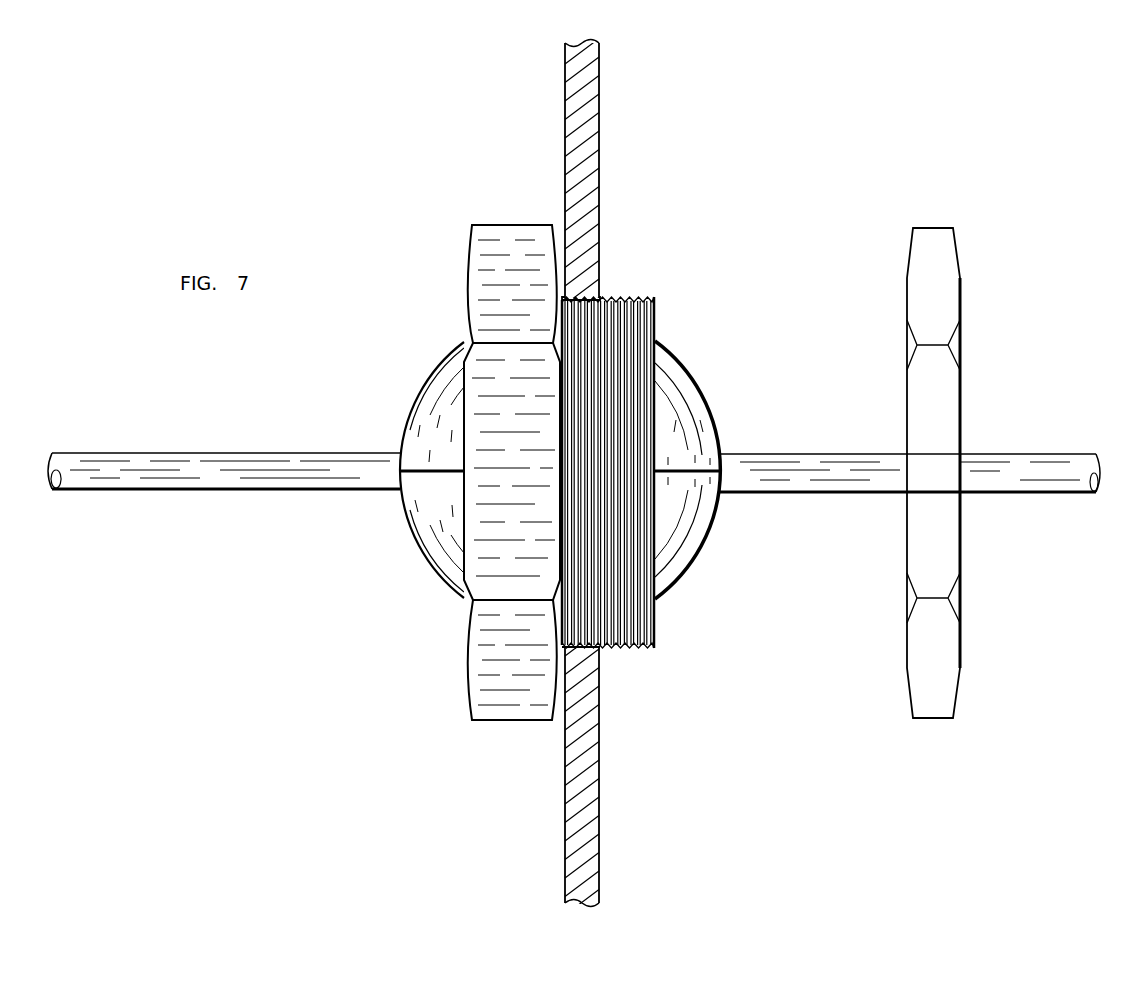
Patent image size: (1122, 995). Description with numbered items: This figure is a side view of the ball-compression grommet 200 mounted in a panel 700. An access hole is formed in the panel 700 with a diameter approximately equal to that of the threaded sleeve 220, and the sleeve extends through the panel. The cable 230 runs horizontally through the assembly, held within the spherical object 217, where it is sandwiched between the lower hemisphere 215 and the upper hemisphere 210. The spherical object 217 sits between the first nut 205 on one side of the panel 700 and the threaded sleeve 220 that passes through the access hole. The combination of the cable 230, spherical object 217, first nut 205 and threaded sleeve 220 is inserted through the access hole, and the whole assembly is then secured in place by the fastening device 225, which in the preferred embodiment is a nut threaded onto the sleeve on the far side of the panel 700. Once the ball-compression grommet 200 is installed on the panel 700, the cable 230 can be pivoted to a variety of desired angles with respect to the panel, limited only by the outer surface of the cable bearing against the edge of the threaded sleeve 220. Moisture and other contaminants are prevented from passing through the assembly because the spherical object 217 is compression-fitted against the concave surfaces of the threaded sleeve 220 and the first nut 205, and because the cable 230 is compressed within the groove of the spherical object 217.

The panel 700 is at (602, 148).
The ball-compression grommet 200 is at (660, 280).
The first nut 205 is at (480, 720).
The upper hemisphere 210 is at (698, 410).
The lower hemisphere 215 is at (698, 527).
The spherical object 217 is at (422, 550).
The threaded sleeve 220 is at (630, 648).
The fastening device 225 is at (961, 312).
The cable 230 is at (235, 455).